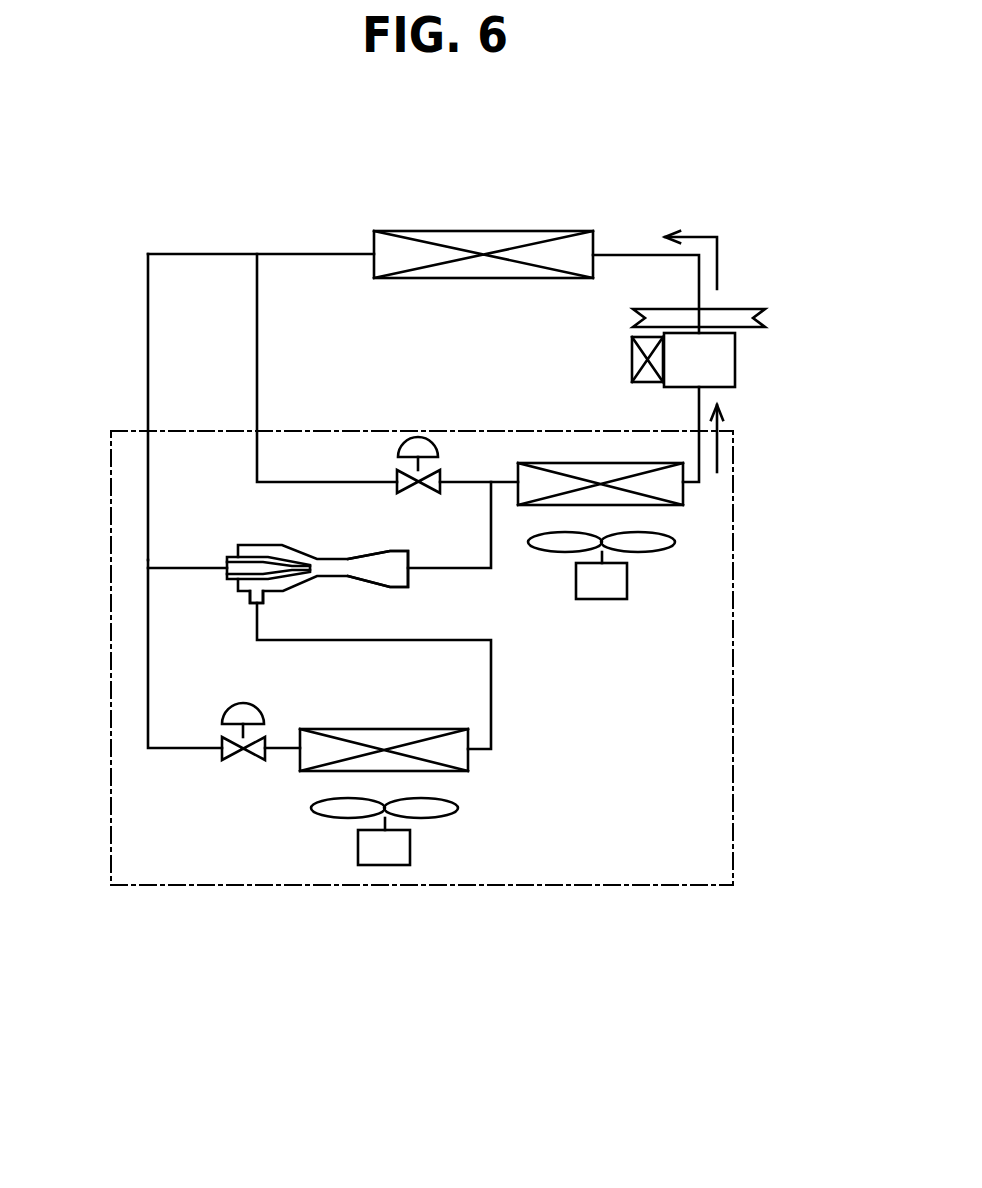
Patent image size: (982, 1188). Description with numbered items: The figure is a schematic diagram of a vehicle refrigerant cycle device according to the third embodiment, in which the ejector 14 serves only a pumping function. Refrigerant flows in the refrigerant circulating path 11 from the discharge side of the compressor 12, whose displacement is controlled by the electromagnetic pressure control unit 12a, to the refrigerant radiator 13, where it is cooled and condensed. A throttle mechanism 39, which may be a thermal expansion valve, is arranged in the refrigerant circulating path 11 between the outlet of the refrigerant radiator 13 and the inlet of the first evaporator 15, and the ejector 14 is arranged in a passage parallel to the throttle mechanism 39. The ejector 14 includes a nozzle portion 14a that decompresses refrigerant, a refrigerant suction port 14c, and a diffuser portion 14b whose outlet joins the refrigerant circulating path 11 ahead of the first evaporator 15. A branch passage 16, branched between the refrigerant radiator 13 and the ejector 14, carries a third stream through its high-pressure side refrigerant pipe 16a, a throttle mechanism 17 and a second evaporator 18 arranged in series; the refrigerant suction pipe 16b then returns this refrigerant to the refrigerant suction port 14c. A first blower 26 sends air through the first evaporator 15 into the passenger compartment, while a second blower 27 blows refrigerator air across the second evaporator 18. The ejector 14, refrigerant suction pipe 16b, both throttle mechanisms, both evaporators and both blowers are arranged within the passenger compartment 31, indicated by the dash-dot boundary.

The refrigerant circulating path 11 is at (254, 310).
The compressor 12 is at (705, 360).
The electromagnetic pressure control unit 12a is at (645, 383).
The refrigerant radiator 13 is at (509, 240).
The ejector 14 is at (320, 577).
The nozzle portion 14a is at (270, 563).
The diffuser portion 14b is at (380, 556).
The refrigerant suction port 14c is at (250, 605).
The first evaporator 15 is at (688, 490).
The branch passage 16 is at (146, 623).
The high-pressure side refrigerant pipe 16a is at (148, 686).
The refrigerant suction pipe 16b is at (491, 690).
The throttle mechanism 17 is at (240, 760).
The second evaporator 18 is at (469, 760).
The first blower 26 is at (627, 582).
The second blower 27 is at (460, 808).
The passenger compartment 31 is at (690, 888).
The throttle mechanism 39 is at (432, 447).